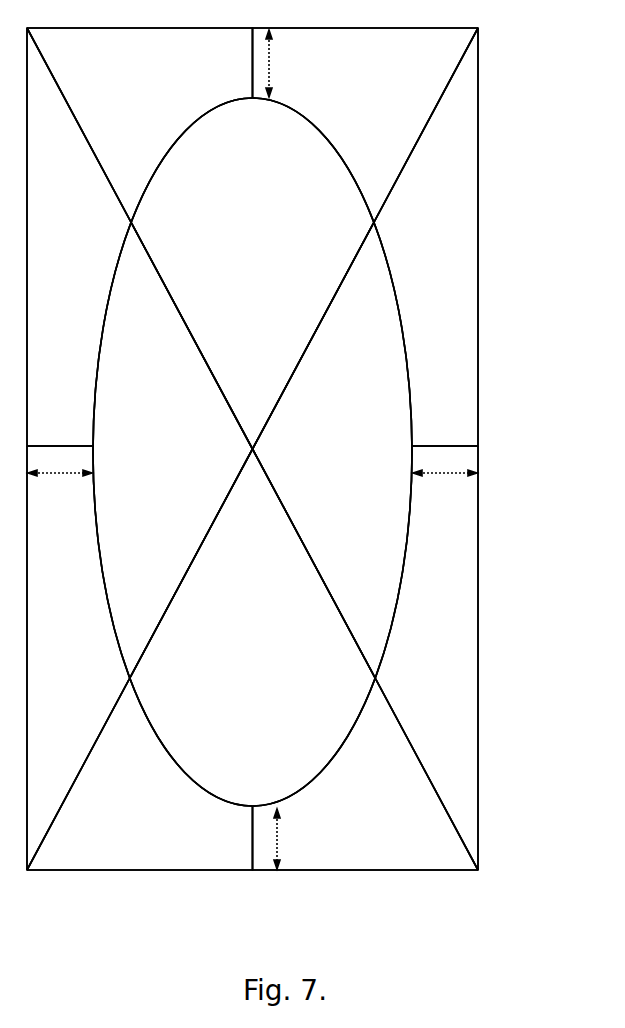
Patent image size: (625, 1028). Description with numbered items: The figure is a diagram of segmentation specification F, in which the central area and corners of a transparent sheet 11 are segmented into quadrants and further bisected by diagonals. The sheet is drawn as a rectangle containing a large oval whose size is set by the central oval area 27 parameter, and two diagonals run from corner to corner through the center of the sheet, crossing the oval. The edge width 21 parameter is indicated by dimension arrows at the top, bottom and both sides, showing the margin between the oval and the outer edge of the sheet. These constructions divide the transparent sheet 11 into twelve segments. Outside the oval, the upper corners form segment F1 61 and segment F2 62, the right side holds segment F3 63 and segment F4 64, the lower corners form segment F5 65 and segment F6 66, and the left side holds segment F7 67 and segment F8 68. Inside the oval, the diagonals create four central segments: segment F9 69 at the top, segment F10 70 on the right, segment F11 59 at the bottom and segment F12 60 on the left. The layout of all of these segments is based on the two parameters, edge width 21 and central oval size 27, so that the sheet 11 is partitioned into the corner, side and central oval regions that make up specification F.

The transparent sheet 11 is at (489, 319).
The edge width 21 is at (252, 449).
The central oval area 27 is at (252, 450).
The segment F11 59 is at (252, 627).
The segment F12 60 is at (173, 450).
The segment F1 61 is at (140, 125).
The segment F2 62 is at (366, 125).
The segment F3 63 is at (426, 240).
The segment F4 64 is at (426, 658).
The segment F5 65 is at (366, 774).
The segment F6 66 is at (140, 774).
The segment F7 67 is at (78, 658).
The segment F8 68 is at (79, 240).
The segment F9 69 is at (252, 273).
The segment F10 70 is at (333, 450).